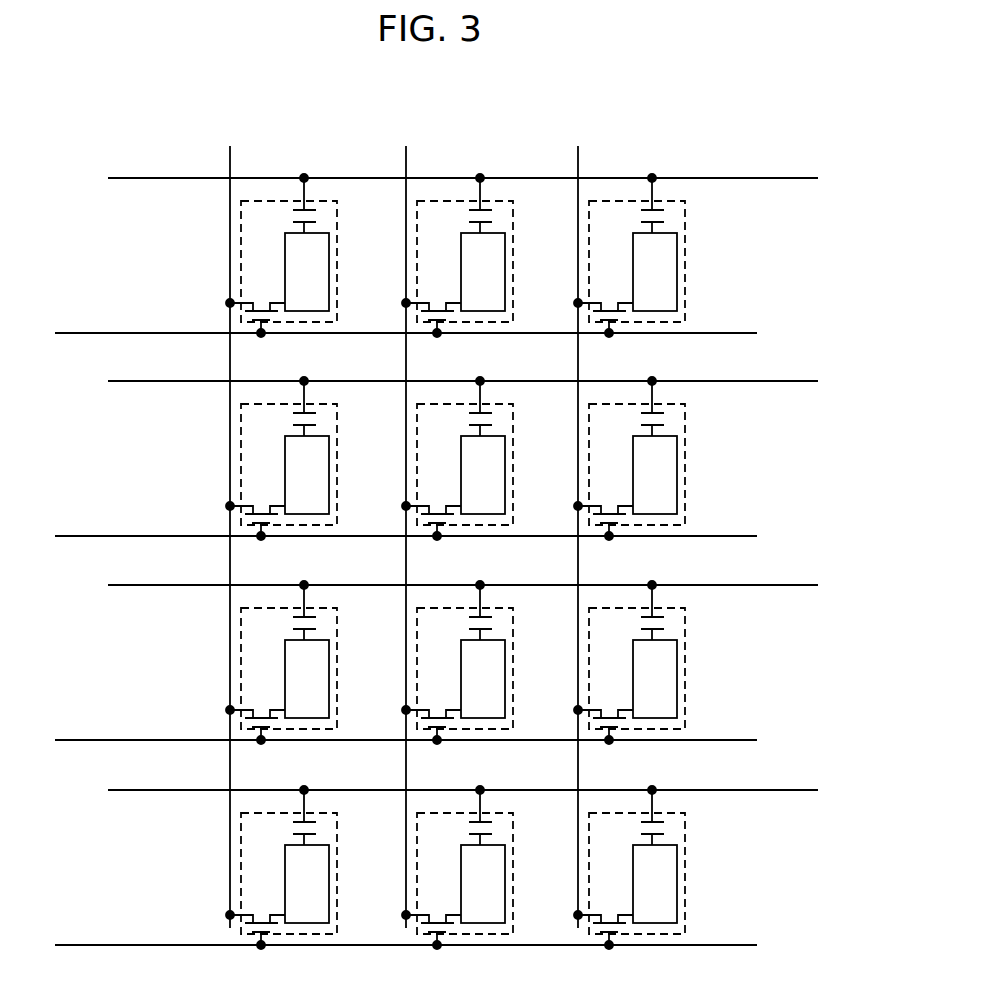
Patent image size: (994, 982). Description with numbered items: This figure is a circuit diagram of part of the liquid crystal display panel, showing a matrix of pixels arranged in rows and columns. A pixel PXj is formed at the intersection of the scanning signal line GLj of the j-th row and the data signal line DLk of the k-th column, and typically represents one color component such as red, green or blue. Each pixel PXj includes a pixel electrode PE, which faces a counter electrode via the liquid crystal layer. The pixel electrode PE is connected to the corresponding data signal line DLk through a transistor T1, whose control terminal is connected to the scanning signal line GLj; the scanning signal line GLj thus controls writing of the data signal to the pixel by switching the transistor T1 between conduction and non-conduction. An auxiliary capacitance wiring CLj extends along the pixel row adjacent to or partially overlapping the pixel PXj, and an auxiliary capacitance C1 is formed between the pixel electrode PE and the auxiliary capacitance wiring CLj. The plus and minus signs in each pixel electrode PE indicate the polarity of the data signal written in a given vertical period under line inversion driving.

The data signal line DLk is at (237, 521).
The auxiliary capacitance wiring CLj is at (463, 165).
The scanning signal line GLj is at (398, 318).
The pixel PXj is at (309, 259).
The auxiliary capacitance C1 is at (461, 509).
The transistor T1 is at (429, 611).
The pixel electrode PE is at (481, 578).